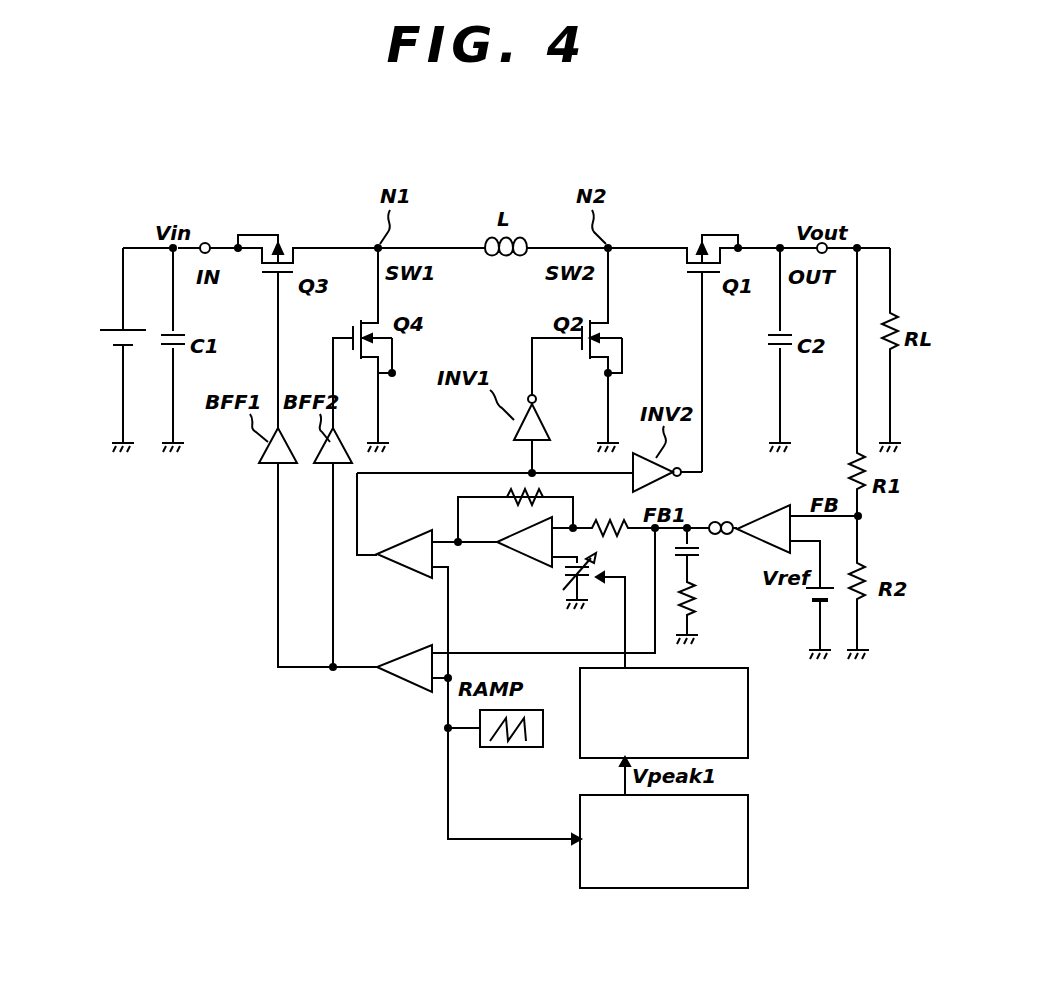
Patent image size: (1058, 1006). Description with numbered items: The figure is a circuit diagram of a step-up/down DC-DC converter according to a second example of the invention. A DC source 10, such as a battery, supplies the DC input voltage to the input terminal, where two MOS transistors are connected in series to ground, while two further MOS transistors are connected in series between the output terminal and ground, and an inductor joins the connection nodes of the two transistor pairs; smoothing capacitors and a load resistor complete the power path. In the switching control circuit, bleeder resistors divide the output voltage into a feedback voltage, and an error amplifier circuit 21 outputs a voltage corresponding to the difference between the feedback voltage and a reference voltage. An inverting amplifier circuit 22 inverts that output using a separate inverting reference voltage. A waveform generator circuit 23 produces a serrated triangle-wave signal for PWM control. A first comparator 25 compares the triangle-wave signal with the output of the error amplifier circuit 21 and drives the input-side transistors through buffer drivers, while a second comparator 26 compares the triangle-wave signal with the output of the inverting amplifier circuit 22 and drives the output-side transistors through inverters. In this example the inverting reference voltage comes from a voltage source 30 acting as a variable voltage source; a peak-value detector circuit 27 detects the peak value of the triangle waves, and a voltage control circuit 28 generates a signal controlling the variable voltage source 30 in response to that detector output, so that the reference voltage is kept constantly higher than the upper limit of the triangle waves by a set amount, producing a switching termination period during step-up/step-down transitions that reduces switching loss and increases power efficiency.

The DC source 10 is at (102, 318).
The error amplifier circuit 21 is at (750, 550).
The inverting amplifier circuit 22 is at (494, 562).
The waveform generator circuit 23 is at (516, 748).
The first comparator 25 is at (406, 690).
The second comparator 26 is at (402, 572).
The peak-value detector circuit 27 is at (748, 826).
The voltage control circuit 28 is at (748, 700).
The voltage source 30 is at (558, 594).